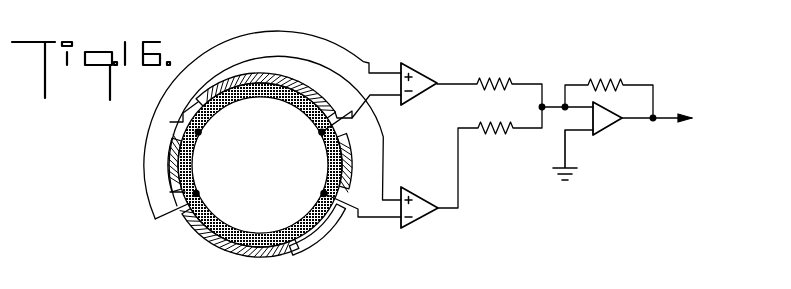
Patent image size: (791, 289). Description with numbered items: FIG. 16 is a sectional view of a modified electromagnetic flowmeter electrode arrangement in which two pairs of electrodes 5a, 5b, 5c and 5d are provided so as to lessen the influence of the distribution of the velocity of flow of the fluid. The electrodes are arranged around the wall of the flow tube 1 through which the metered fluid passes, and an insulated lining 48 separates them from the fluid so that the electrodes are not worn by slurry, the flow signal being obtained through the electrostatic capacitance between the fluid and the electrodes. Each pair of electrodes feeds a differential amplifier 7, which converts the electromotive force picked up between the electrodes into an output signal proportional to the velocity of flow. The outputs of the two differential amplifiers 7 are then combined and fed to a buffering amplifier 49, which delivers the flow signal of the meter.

The flow tube 1 is at (320, 238).
The electrode 5a is at (196, 193).
The electrode 5b is at (322, 132).
The electrode 5c is at (198, 132).
The electrode 5d is at (324, 193).
The differential amplifier 7 is at (420, 75).
The insulated lining 48 is at (210, 242).
The buffering amplifier 49 is at (607, 123).